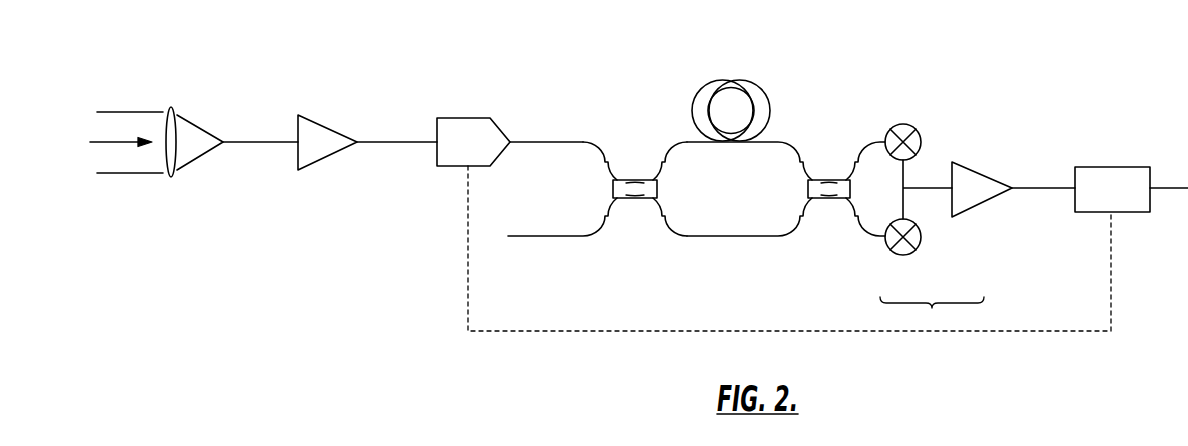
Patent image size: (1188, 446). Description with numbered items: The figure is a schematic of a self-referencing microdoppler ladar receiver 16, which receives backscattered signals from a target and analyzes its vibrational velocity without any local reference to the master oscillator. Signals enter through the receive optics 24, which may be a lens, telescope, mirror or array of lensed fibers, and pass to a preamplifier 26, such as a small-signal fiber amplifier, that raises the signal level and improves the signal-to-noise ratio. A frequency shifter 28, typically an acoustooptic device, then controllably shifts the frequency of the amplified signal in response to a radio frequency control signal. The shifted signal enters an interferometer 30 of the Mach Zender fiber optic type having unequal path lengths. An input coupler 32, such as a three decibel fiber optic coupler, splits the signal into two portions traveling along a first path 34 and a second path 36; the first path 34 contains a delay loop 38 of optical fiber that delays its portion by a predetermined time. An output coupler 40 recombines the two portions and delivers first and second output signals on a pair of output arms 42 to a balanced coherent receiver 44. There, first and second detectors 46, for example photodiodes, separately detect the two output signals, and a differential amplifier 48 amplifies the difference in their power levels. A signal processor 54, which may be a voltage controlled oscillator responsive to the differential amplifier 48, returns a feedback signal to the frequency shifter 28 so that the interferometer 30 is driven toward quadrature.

The self-referencing microdoppler ladar receiver 16 is at (1114, 82).
The receive optics 24 is at (177, 137).
The preamplifier 26 is at (322, 132).
The frequency shifter 28 is at (470, 135).
The interferometer 30 is at (742, 199).
The input coupler 32 is at (627, 198).
The first path 34 is at (780, 140).
The second path 36 is at (795, 220).
The delay loop 38 is at (757, 103).
The output coupler 40 is at (820, 180).
The output arms 42 is at (868, 142).
The balanced coherent receiver 44 is at (932, 308).
The first and second detectors 46 is at (912, 123).
The differential amplifier 48 is at (980, 170).
The signal processor 54 is at (1118, 167).